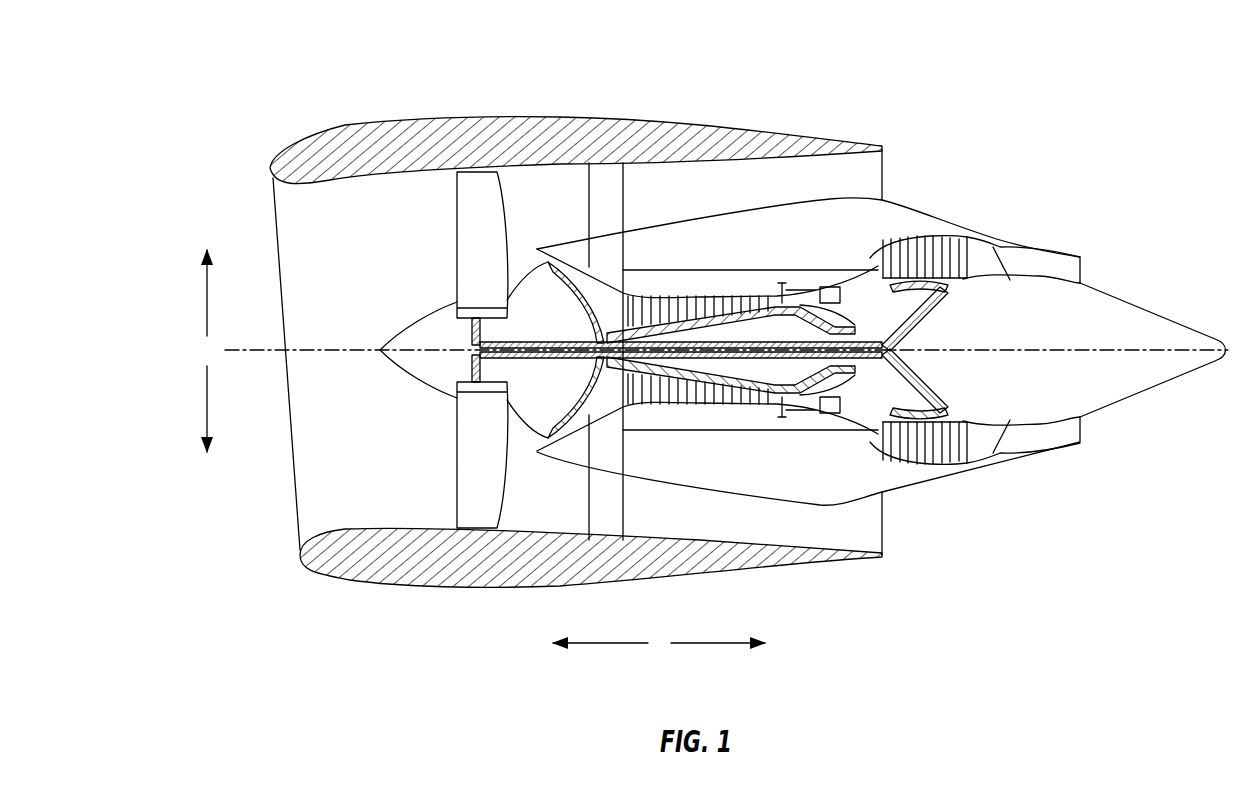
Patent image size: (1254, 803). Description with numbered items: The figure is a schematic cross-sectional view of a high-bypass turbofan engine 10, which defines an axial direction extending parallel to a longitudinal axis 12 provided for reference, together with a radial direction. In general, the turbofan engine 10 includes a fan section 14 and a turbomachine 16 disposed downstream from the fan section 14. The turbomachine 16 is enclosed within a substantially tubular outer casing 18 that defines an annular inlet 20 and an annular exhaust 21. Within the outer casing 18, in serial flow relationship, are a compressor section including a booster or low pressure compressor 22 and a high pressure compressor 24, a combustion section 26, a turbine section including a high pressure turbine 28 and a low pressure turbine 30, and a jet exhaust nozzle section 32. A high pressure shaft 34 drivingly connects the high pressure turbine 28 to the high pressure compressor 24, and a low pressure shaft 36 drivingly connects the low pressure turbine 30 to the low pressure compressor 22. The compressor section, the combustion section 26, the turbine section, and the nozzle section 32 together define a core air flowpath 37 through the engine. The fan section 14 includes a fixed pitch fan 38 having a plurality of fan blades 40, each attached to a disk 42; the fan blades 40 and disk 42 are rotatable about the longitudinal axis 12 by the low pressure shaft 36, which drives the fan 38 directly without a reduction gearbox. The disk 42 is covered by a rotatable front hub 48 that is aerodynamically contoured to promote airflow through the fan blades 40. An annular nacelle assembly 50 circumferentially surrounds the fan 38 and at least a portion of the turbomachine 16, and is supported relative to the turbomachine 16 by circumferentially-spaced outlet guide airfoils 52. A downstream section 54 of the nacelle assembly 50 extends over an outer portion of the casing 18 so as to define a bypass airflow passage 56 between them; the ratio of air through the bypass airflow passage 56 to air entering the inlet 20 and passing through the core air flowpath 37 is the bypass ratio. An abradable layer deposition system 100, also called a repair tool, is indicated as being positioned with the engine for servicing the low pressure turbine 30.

The turbofan engine 10 is at (1013, 103).
The longitudinal axis 12 is at (1021, 350).
The fan section 14 is at (406, 184).
The turbomachine 16 is at (750, 255).
The outer casing 18 is at (760, 492).
The annular inlet 20 is at (533, 453).
The annular exhaust 21 is at (1090, 445).
The low pressure compressor 22 is at (608, 366).
The high pressure compressor 24 is at (645, 400).
The combustion section 26 is at (797, 403).
The high pressure turbine 28 is at (866, 413).
The low pressure turbine 30 is at (953, 473).
The jet exhaust nozzle section 32 is at (1010, 444).
The high pressure shaft 34 is at (836, 320).
The low pressure shaft 36 is at (912, 329).
The core air flowpath 37 is at (614, 403).
The fixed pitch fan 38 is at (430, 393).
The fan blades 40 is at (455, 484).
The disk 42 is at (458, 308).
The front hub 48 is at (395, 366).
The nacelle assembly 50 is at (493, 598).
The outlet guide airfoils 52 is at (625, 208).
The downstream section 54 is at (826, 137).
The bypass airflow passage 56 is at (769, 185).
The abradable layer deposition system 100 is at (684, 118).